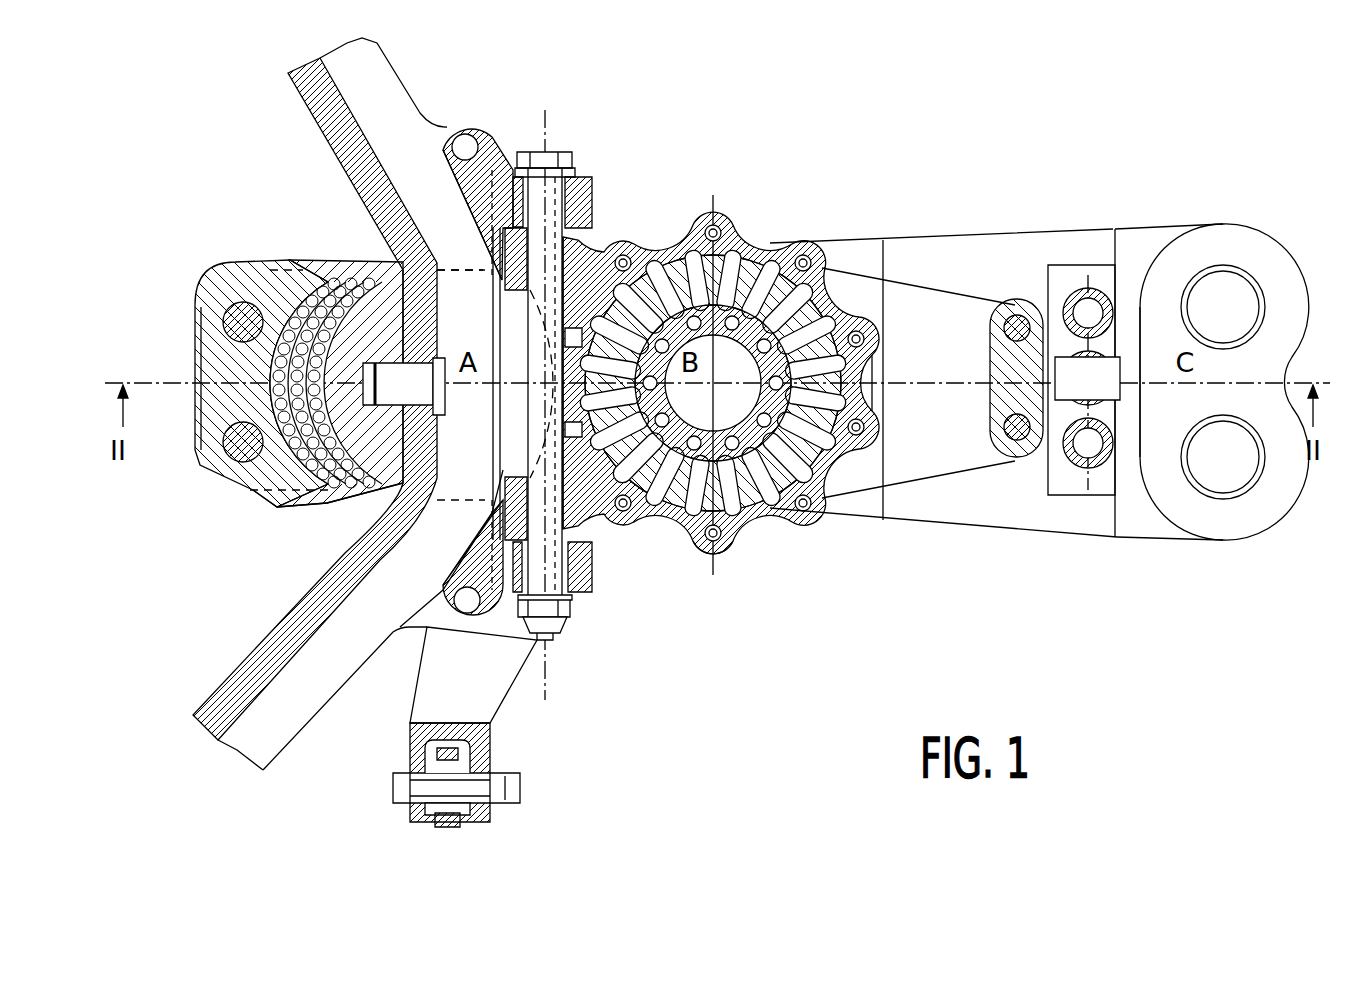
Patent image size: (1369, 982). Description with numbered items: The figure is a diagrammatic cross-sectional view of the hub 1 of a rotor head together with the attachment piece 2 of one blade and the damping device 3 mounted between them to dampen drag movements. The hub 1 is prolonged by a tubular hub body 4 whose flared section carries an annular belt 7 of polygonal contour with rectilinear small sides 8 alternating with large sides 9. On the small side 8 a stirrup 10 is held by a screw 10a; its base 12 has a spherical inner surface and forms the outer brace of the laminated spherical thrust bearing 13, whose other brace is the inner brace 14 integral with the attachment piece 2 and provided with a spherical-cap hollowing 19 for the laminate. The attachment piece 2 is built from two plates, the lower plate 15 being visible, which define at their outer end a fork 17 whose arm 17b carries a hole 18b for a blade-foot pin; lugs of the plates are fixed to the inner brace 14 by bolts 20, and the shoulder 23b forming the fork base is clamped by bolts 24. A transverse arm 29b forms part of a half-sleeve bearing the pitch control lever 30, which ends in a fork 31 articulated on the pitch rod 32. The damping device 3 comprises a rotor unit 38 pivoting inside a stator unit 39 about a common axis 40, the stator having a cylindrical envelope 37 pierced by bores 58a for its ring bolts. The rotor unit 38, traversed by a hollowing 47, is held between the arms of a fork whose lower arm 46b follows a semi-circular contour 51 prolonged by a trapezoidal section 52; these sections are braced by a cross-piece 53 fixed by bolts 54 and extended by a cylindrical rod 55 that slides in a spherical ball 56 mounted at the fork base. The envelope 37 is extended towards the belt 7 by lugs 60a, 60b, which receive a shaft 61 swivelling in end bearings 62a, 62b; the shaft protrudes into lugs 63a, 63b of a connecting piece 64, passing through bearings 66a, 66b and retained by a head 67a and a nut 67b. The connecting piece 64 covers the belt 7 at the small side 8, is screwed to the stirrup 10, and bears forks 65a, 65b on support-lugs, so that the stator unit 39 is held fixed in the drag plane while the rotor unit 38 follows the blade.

The hub 1 is at (312, 745).
The attachment piece 2 is at (845, 556).
The damping device 3 is at (718, 212).
The tubular hub body 4 is at (232, 661).
The belt 7 is at (313, 620).
The small side 8 is at (455, 439).
The large side 9 is at (240, 752).
The stirrup 10 is at (385, 318).
The screw 10a is at (368, 493).
The base 12 is at (300, 500).
The laminated spherical thrust bearing 13 is at (235, 402).
The inner brace 14 is at (222, 365).
The lower plate 15 is at (1005, 505).
The fork 17 is at (1266, 216).
The arm of the fork 17b is at (1225, 528).
The hole 18b is at (1240, 297).
The hollowing 19 is at (298, 280).
The bolt 20 is at (243, 302).
The shoulder 23b is at (1092, 290).
The bolt 24 is at (1092, 470).
The transverse arm 29b is at (493, 690).
The pitch control lever 30 is at (545, 770).
The fork 31 is at (410, 740).
The pitch rod 32 is at (450, 828).
The cylindrical envelope 37 is at (838, 262).
The rotor unit 38 is at (878, 363).
The stator unit 39 is at (748, 240).
The axis 40 is at (725, 393).
The arm of the fork 46b is at (887, 470).
The hollowing 47 is at (736, 352).
The semi-circular contour 51 is at (755, 523).
The trapezoidal section 52 is at (935, 285).
The cross-piece 53 is at (990, 395).
The bolt 54 is at (1018, 315).
The cylindrical rod 55 is at (1120, 392).
The spherical ball 56 is at (1098, 352).
The bore 58a is at (640, 250).
The lug 60a is at (488, 258).
The lug 60b is at (487, 508).
The shaft 61 is at (555, 165).
The end bearing 62a is at (505, 287).
The end bearing 62b is at (505, 483).
The lug 63a is at (592, 205).
The lug 63b is at (592, 565).
The connecting piece 64 is at (496, 330).
The fork 65a is at (470, 118).
The fork 65b is at (468, 616).
The bearing 66a is at (585, 178).
The bearing 66b is at (572, 598).
The head 67a is at (530, 152).
The nut 67b is at (567, 628).